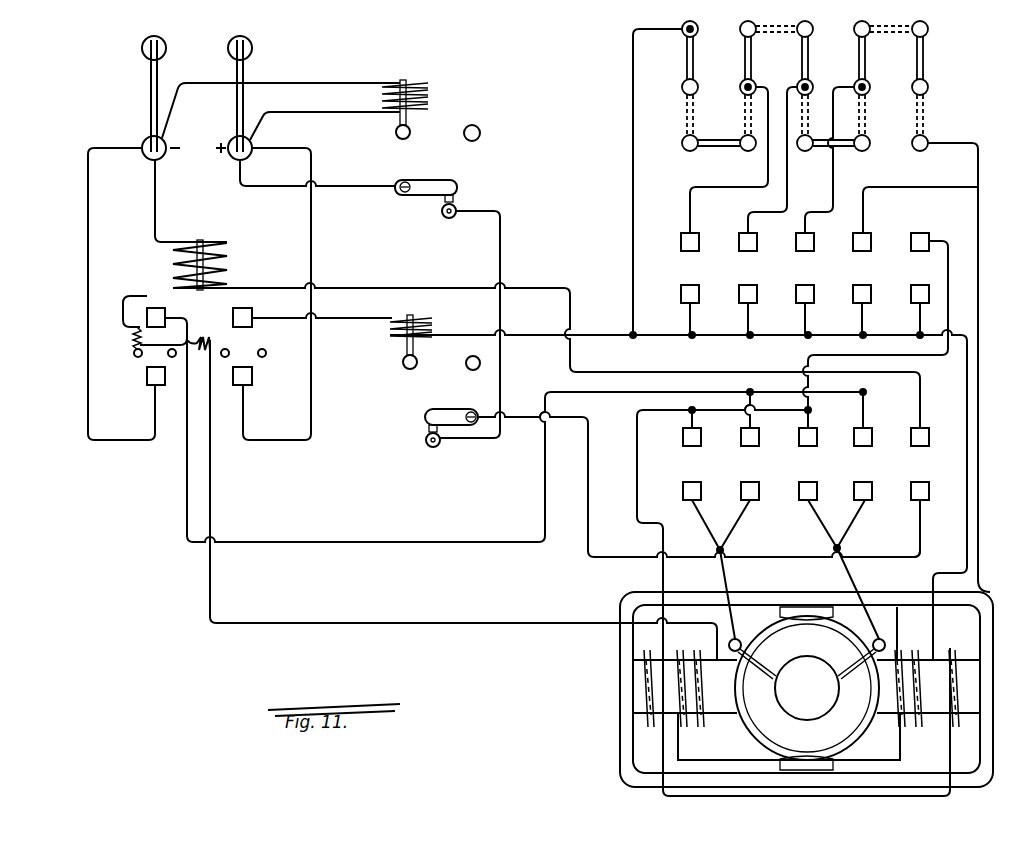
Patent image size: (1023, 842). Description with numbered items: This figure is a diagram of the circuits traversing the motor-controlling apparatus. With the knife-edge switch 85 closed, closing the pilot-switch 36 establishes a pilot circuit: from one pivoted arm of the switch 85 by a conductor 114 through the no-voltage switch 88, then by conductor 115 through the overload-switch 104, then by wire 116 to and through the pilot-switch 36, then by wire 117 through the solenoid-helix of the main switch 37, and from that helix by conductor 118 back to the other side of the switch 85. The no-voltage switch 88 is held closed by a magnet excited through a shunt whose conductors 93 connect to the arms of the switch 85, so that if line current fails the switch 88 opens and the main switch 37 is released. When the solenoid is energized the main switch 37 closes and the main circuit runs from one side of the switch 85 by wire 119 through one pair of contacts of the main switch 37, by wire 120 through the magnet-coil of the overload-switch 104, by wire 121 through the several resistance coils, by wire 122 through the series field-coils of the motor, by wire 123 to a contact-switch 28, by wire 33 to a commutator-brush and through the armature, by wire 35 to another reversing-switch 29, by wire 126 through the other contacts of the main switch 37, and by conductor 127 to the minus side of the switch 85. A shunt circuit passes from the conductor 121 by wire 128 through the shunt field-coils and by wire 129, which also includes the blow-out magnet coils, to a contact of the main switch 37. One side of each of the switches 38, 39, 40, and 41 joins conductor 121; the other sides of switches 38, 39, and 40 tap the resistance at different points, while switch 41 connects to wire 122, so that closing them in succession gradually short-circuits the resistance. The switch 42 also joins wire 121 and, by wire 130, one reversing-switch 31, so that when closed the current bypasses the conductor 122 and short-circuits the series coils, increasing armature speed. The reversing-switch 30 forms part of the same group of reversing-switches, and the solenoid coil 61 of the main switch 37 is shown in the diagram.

The knife-edge switch 85 is at (197, 98).
The conductors 93 is at (295, 99).
The conductor 118 is at (191, 201).
The coil 61 is at (214, 265).
The conductor 127 is at (121, 294).
The main switch 37 is at (194, 340).
The conductor 114 is at (317, 173).
The wire 119 is at (294, 294).
The no-voltage switch 88 is at (426, 188).
The conductor 115 is at (489, 324).
The overload-switch 104 is at (451, 417).
The wire 120 is at (366, 341).
The wire 121 is at (678, 486).
The wire 117 is at (546, 355).
The wire 130 is at (875, 334).
The wire 126 is at (526, 441).
The wire 116 is at (699, 484).
The wire 128 is at (955, 385).
The wire 123 is at (793, 600).
The wire 129 is at (463, 500).
The wire 122 is at (940, 367).
The switch 38 is at (690, 284).
The switch 39 is at (748, 284).
The switch 40 is at (805, 284).
The switch 41 is at (862, 284).
The switch 42 is at (920, 284).
The contact-switch 28 is at (691, 464).
The reversing-switch 30 is at (751, 464).
The reversing-switch 31 is at (808, 464).
The reversing-switch 29 is at (863, 464).
The pilot-switch 36 is at (920, 464).
The wire 33 is at (734, 589).
The wire 35 is at (846, 589).